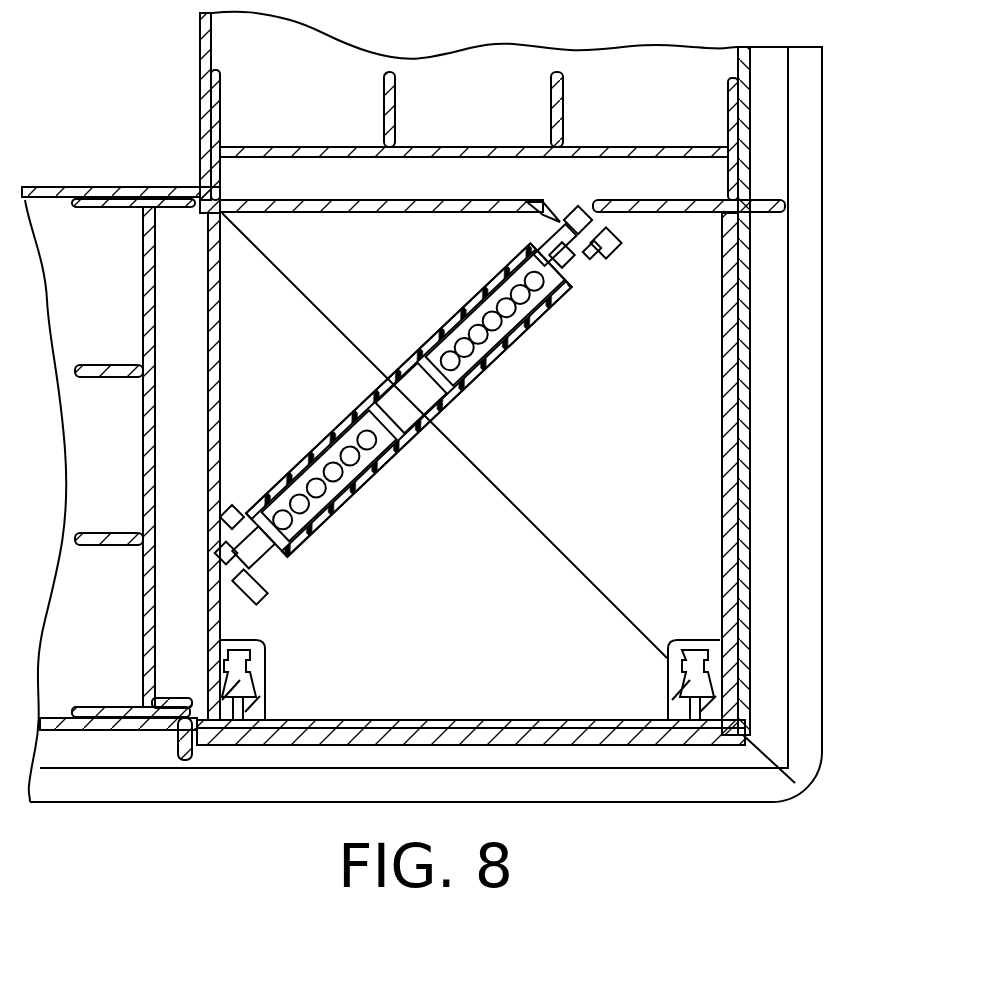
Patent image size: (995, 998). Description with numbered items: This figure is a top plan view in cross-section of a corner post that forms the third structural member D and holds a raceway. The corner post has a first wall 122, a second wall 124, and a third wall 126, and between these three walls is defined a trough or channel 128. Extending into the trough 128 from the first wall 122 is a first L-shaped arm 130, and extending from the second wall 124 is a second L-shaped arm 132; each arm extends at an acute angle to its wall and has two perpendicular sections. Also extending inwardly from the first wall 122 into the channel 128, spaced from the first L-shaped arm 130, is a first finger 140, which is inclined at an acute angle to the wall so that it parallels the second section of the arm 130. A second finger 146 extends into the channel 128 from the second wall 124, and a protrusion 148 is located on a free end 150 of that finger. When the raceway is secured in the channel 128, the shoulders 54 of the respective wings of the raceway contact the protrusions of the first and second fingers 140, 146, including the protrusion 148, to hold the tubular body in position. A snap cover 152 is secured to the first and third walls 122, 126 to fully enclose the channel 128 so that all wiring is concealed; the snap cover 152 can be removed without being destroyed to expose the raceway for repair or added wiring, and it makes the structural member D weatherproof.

The third structural member D is at (762, 446).
The shoulder 54 is at (240, 578).
The first wall 122 is at (210, 415).
The second wall 124 is at (373, 208).
The third wall 126 is at (728, 383).
The trough 128 is at (690, 323).
The first L-shaped arm 130 is at (238, 500).
The second L-shaped arm 132 is at (530, 237).
The first finger 140 is at (278, 607).
The second finger 146 is at (625, 225).
The protrusion 148 is at (597, 258).
The free end 150 is at (620, 247).
The snap cover 152 is at (440, 736).